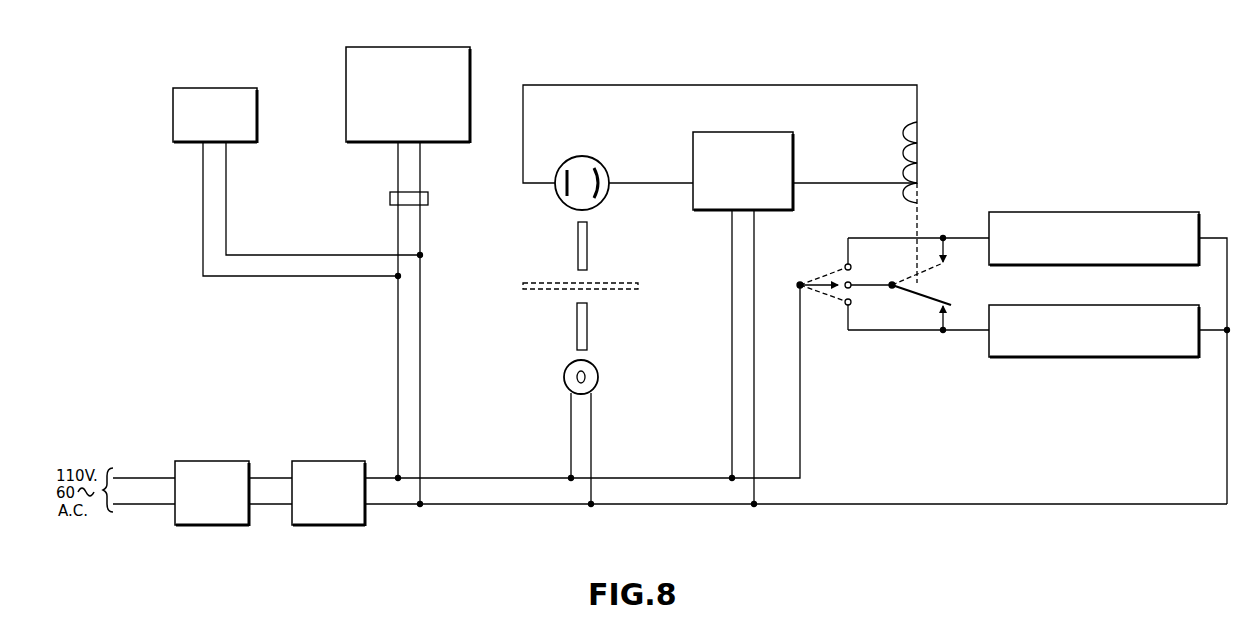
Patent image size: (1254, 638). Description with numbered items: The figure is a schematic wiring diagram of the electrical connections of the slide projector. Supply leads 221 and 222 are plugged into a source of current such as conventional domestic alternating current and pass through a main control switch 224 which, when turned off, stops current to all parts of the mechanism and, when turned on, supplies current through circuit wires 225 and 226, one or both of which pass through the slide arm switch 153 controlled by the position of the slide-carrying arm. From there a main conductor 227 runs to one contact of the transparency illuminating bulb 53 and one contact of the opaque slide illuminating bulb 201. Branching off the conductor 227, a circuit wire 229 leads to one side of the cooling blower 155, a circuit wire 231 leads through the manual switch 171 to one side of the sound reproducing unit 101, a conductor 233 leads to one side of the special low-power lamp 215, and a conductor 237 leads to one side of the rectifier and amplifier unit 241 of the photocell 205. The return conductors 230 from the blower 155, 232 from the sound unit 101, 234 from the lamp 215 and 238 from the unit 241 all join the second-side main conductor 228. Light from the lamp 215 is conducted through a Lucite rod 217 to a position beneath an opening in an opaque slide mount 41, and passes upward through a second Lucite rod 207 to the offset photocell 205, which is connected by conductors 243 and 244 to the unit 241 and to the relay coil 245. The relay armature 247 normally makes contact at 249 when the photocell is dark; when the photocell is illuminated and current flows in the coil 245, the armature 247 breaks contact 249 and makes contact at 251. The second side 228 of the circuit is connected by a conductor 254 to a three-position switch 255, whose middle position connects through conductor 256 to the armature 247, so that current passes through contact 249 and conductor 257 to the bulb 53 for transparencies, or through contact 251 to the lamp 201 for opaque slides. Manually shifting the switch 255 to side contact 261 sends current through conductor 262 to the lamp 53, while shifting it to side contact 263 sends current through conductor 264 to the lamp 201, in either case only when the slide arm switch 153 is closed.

The blower 155 is at (216, 88).
The sound reproducing unit 101 is at (418, 47).
The manual switch 171 is at (428, 198).
The circuit wire 229 is at (238, 255).
The return conductor 230 is at (335, 276).
The return conductor 232 is at (398, 229).
The circuit wire 231 is at (420, 229).
The photocell 205 is at (600, 165).
The conductor 243 is at (627, 85).
The relay coil 245 is at (928, 152).
The conductor 244 is at (657, 170).
The rectifier and amplifier unit 241 is at (745, 132).
The Lucite rod 207 is at (590, 247).
The slide mount 41 is at (606, 289).
The Lucite rod 217 is at (577, 325).
The lamp 215 is at (598, 370).
The return conductor 234 is at (571, 409).
The conductor 233 is at (591, 428).
The return conductor 238 is at (732, 318).
The conductor 237 is at (754, 388).
The lead 222 is at (148, 478).
The lead 221 is at (144, 504).
The main control switch 224 is at (205, 461).
The circuit wire 226 is at (264, 478).
The circuit wire 225 is at (264, 504).
The slide arm switch 153 is at (328, 461).
The second-side main conductor 228 is at (383, 478).
The main conductor 227 is at (383, 504).
The conductor 254 is at (800, 428).
The three-position switch 255 is at (825, 287).
The side contact 263 is at (846, 262).
The side contact 261 is at (845, 305).
The conductor 256 is at (866, 285).
The relay armature 247 is at (920, 300).
The conductor 264 is at (924, 238).
The contact 251 is at (954, 260).
The conductor 262 is at (905, 332).
The contact 249 is at (967, 318).
The conductor 257 is at (971, 332).
The opaque slide illuminating bulb 201 is at (1142, 212).
The transparency illuminating bulb 53 is at (1142, 305).